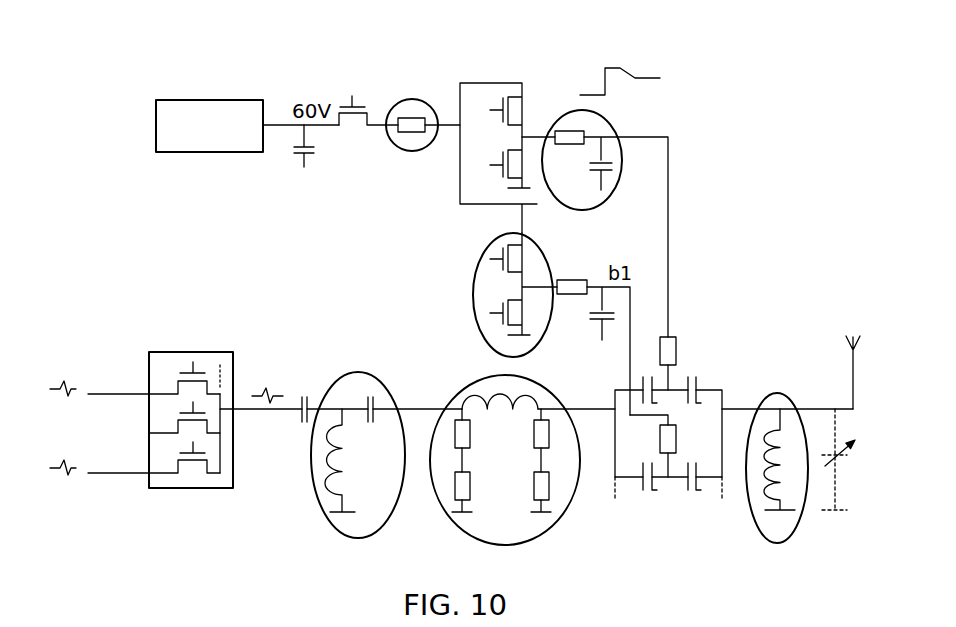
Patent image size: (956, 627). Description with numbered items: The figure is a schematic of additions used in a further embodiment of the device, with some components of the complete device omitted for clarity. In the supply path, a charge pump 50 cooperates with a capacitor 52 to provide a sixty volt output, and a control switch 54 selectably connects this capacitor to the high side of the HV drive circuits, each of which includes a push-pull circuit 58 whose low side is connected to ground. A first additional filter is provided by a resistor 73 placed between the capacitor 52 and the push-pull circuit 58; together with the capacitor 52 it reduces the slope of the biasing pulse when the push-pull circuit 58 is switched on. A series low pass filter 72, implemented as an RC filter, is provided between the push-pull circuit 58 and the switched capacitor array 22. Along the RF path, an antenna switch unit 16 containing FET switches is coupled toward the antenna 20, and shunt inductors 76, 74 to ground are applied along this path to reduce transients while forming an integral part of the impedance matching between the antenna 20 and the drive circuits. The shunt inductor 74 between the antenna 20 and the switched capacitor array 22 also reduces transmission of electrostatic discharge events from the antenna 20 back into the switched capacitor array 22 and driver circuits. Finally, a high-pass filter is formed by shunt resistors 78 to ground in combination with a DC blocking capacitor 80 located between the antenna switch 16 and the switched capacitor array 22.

The antenna switch unit 16 is at (182, 352).
The antenna 20 is at (851, 386).
The switched capacitor array 22 is at (725, 342).
The charge pump 50 is at (205, 100).
The capacitor 52 is at (297, 170).
The control switch 54 is at (358, 97).
The push-pull circuit 58 is at (556, 79).
The series low pass filter 72 is at (600, 112).
The resistor 73 is at (412, 118).
The shunt inductor 74 is at (775, 500).
The shunt inductor 76 is at (330, 484).
The shunt resistors 78 is at (549, 489).
The DC blocking capacitor 80 is at (305, 395).